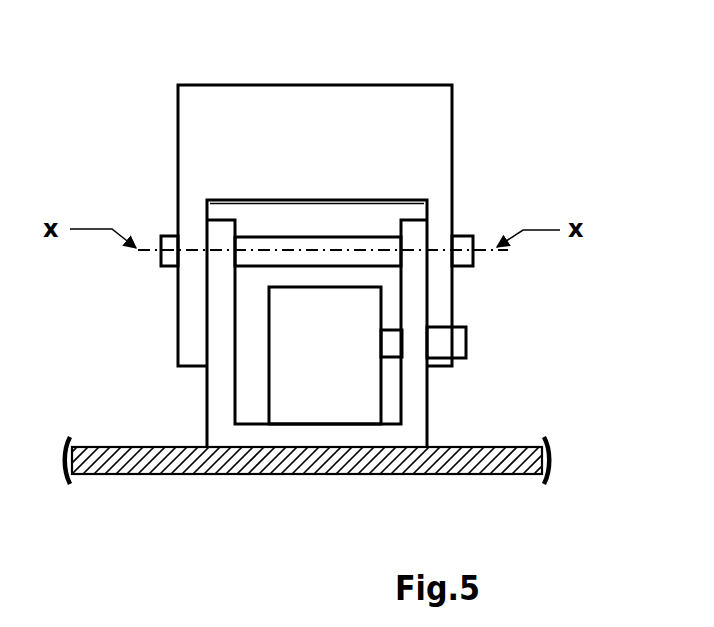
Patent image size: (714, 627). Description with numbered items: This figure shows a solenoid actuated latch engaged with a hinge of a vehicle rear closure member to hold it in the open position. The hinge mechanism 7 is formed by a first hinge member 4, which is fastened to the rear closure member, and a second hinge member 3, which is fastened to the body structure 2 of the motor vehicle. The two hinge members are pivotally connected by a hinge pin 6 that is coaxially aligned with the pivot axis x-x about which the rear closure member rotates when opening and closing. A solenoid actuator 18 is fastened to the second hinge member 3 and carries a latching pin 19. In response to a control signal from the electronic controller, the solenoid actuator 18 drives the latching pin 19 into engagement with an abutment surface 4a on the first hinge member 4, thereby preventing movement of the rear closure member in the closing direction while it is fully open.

The body structure 2 is at (475, 447).
The second hinge member 3 is at (207, 403).
The first hinge member 4 is at (389, 202).
The abutment surface 4a is at (440, 308).
The hinge pin 6 is at (373, 223).
The hinge mechanism 7 is at (322, 184).
The solenoid actuator 18 is at (269, 338).
The latching pin 19 is at (466, 346).